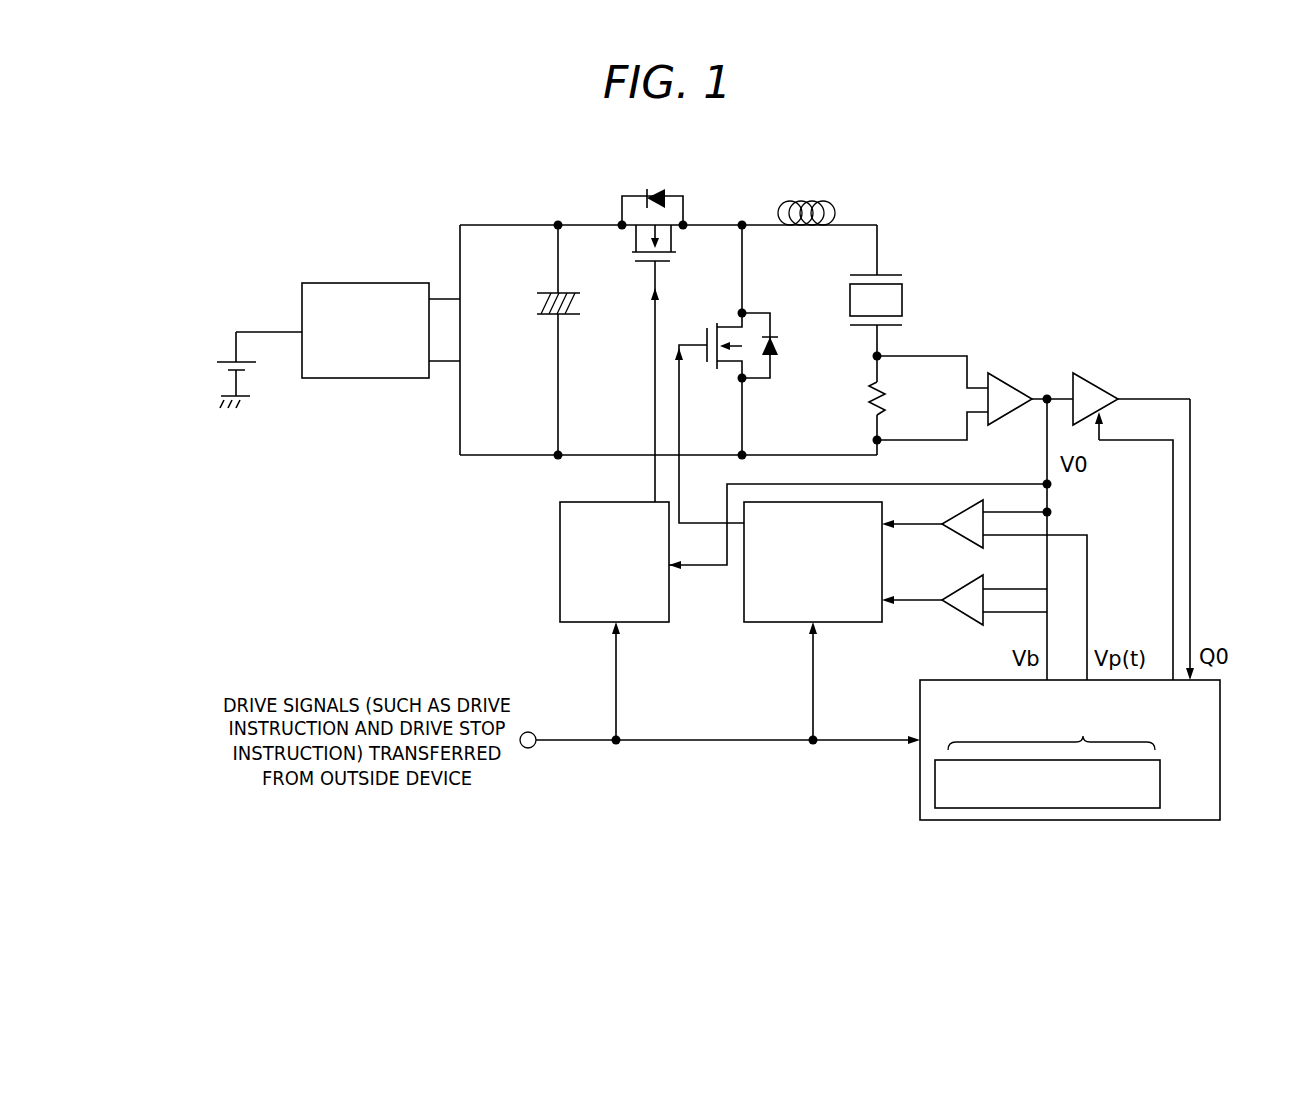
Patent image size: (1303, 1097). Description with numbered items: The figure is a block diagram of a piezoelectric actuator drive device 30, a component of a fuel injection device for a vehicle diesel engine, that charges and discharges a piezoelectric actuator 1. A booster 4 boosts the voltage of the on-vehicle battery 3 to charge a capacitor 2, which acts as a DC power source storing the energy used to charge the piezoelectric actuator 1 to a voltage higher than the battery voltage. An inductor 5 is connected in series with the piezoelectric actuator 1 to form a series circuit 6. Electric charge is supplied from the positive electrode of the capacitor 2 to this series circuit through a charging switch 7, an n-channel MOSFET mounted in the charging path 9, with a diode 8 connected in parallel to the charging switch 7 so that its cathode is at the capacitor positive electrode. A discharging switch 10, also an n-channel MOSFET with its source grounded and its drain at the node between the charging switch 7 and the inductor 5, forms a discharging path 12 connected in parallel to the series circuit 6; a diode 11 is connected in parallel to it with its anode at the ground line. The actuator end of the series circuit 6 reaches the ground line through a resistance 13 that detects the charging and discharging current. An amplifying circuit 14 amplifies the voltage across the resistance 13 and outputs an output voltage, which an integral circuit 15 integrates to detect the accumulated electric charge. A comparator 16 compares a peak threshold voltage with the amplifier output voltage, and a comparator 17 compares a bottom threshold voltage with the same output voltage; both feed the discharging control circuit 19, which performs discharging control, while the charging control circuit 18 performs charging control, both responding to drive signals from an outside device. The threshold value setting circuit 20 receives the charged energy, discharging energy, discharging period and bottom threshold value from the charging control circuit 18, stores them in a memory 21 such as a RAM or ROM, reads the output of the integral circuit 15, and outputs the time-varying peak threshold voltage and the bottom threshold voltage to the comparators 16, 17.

The piezoelectric actuator 1 is at (904, 297).
The capacitor 2 is at (541, 293).
The on-vehicle battery 3 is at (215, 368).
The booster 4 is at (365, 283).
The inductor 5 is at (836, 208).
The series circuit 6 is at (942, 188).
The charging switch 7 is at (694, 215).
The diode 8 is at (650, 189).
The charging path 9 is at (605, 188).
The discharging switch 10 is at (750, 307).
The diode 11 is at (780, 346).
The discharging path 12 is at (730, 390).
The resistance 13 is at (866, 398).
The amplifying circuit 14 is at (1010, 381).
The integral circuit 15 is at (1095, 381).
The comparator 16 is at (948, 545).
The comparator 17 is at (948, 622).
The charging control circuit 18 is at (583, 625).
The discharging control circuit 19 is at (779, 625).
The threshold value setting circuit 20 is at (920, 790).
The memory 21 is at (1160, 786).
The piezoelectric actuator drive device 30 is at (1138, 193).